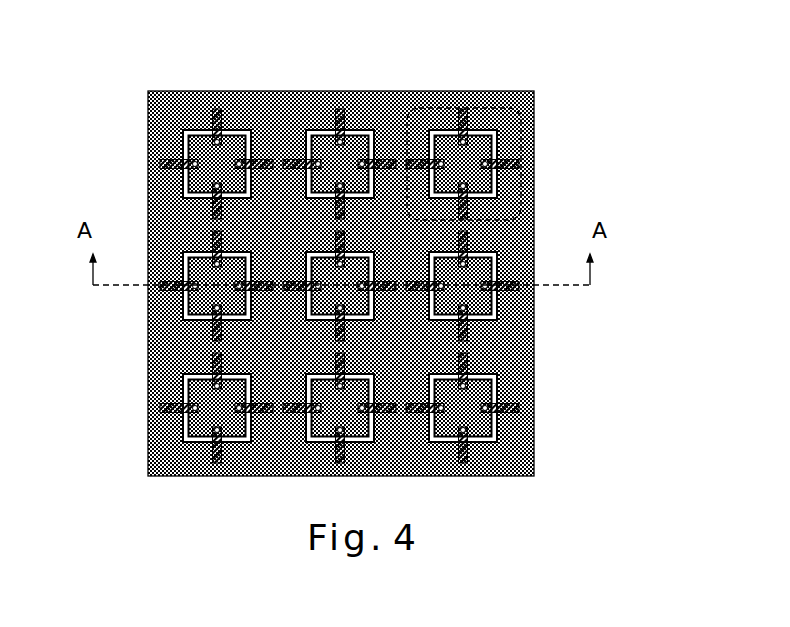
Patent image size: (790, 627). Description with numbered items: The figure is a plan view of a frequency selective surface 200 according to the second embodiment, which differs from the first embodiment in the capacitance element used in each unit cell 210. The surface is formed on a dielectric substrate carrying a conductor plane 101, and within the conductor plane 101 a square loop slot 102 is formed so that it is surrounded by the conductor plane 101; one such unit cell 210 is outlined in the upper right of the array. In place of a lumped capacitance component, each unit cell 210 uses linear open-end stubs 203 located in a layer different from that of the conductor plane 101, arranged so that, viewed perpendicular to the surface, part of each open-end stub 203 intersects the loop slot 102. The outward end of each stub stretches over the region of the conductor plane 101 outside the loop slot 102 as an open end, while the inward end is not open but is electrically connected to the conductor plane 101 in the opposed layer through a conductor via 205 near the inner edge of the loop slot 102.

The frequency selective surface 200 is at (329, 246).
The conductor plane 101 is at (345, 91).
The unit cell 210 is at (443, 108).
The open-end stub 203 is at (463, 112).
The conductor via 205 is at (476, 135).
The loop slot 102 is at (500, 190).